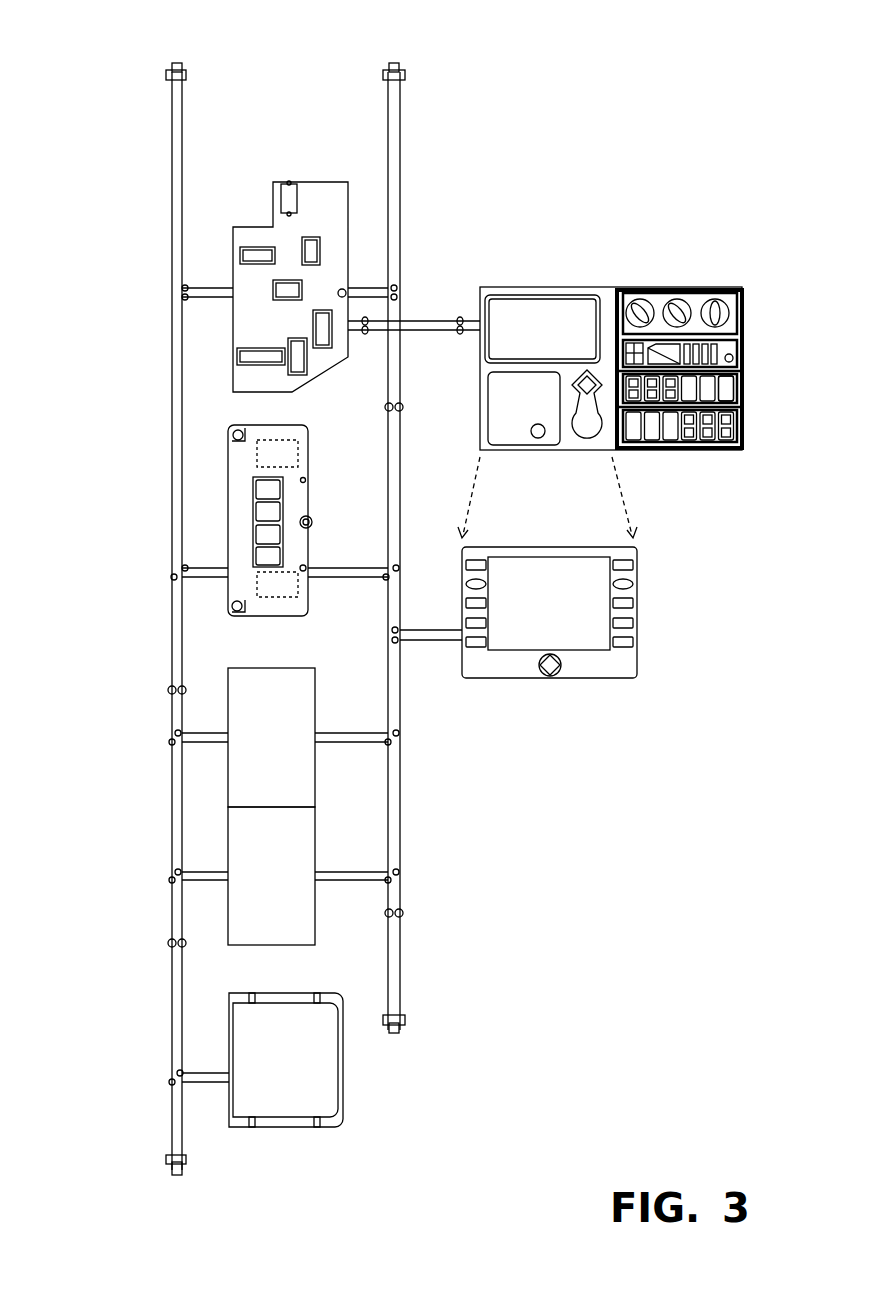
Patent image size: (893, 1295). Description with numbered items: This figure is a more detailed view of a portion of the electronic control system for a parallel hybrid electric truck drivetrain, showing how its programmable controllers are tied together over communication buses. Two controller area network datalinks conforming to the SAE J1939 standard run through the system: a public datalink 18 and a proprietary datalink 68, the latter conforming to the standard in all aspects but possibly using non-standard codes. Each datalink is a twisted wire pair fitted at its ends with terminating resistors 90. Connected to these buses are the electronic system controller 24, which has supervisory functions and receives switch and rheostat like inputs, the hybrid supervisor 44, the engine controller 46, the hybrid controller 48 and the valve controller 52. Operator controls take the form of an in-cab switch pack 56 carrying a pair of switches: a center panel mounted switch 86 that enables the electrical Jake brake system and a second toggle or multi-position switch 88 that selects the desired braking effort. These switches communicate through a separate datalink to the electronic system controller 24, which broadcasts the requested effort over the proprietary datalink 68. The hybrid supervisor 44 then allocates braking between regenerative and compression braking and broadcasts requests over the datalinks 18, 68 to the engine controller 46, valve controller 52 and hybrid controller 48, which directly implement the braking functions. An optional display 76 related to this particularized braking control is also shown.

The public datalink 18 is at (172, 497).
The electronic system controller 24 is at (348, 286).
The hybrid supervisor 44 is at (305, 708).
The engine controller 46 is at (293, 850).
The hybrid controller 48 is at (297, 497).
The valve controller 52 is at (258, 1060).
The in-cab switch pack 56 is at (677, 365).
The proprietary datalink 68 is at (398, 703).
The display 76 is at (637, 578).
The center panel mounted switch 86 is at (727, 387).
The multi-position switch 88 is at (743, 393).
The terminating resistors 90 is at (168, 72).